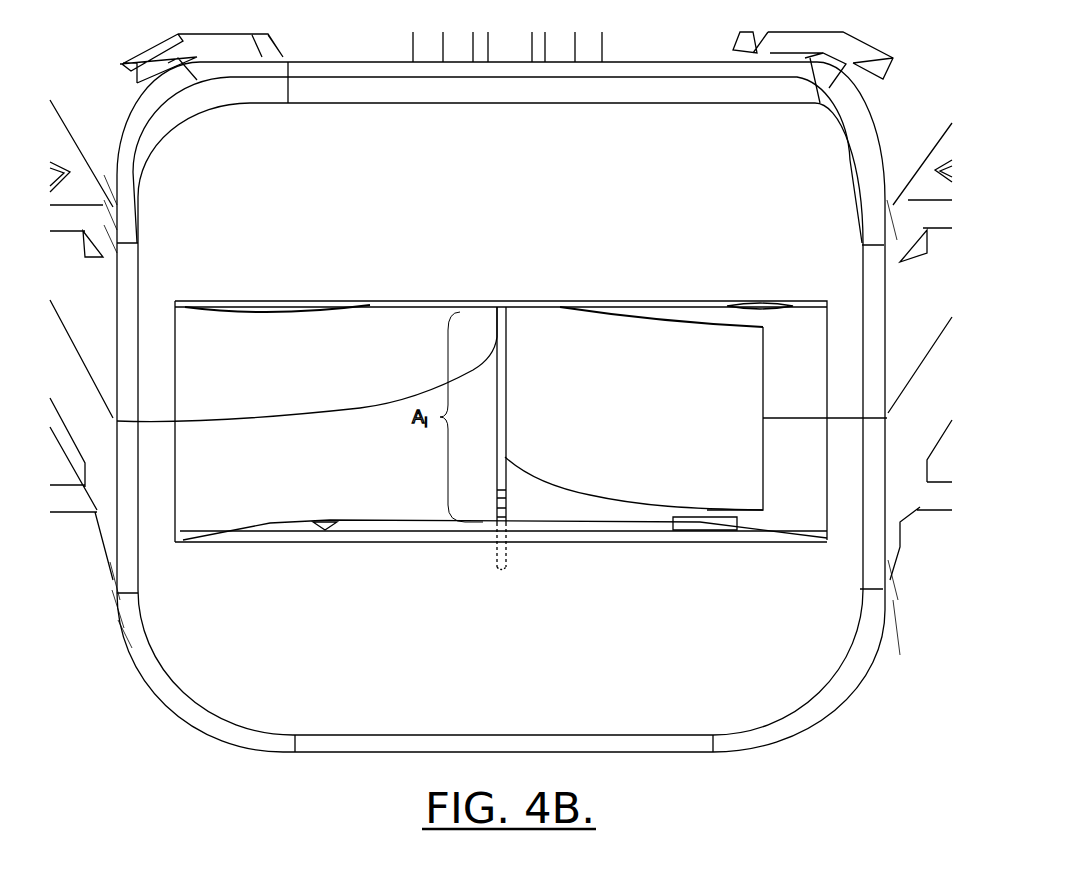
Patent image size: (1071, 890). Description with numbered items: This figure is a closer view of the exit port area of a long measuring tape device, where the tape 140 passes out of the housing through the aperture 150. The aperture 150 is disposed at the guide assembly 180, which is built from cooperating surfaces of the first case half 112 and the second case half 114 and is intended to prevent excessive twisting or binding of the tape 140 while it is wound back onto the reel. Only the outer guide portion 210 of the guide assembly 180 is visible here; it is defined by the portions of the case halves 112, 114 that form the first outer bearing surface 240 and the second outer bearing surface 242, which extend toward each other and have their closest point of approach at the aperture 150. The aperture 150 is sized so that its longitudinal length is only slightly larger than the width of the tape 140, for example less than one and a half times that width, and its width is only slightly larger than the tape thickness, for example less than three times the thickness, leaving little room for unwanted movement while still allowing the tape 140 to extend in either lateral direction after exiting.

The first case half 112 is at (103, 287).
The second case half 114 is at (105, 443).
The tape 140 is at (645, 425).
The aperture 150 is at (502, 462).
The guide assembly 180 is at (178, 746).
The outer guide portion 210 is at (355, 296).
The first outer bearing surface 240 is at (373, 463).
The second outer bearing surface 242 is at (795, 355).